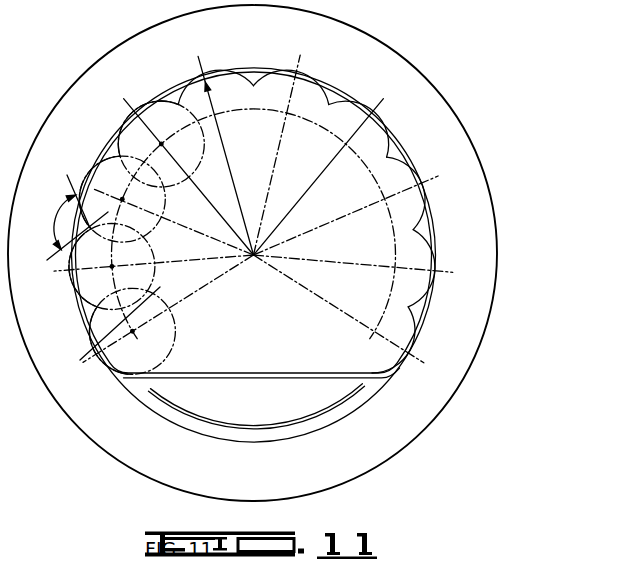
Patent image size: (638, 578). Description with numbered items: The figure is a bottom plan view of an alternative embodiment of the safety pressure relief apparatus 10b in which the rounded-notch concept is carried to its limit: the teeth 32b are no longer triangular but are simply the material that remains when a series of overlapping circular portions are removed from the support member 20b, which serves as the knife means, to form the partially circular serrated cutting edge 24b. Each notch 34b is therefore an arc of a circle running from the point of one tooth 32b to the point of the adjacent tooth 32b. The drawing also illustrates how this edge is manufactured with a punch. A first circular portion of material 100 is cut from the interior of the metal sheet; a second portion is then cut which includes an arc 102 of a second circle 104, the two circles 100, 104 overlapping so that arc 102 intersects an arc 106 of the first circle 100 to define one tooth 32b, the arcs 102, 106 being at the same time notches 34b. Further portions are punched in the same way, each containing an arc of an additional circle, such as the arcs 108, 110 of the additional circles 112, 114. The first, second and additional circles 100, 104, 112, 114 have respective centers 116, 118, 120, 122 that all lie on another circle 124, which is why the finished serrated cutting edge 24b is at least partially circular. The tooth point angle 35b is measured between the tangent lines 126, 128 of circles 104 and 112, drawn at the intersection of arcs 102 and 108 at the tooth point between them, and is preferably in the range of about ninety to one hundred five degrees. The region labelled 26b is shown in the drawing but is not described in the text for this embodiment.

The safety pressure relief apparatus 10b is at (450, 55).
The support member 20b is at (475, 124).
The serrated cutting edge 24b is at (226, 133).
The cup / chamber 26b is at (285, 362).
The teeth 32b is at (240, 86).
The notches 34b is at (282, 77).
The tooth point angle 35b is at (58, 221).
The first circular portion of material 100 is at (182, 315).
The arc of second circle 102 is at (74, 278).
The second circle 104 is at (150, 244).
The arc of first circle 106 is at (149, 332).
The arc of additional circle 108 is at (122, 199).
The arc of additional circle 110 is at (137, 130).
The additional circle 112 is at (180, 205).
The additional circle 114 is at (190, 181).
The center of first circle 116 is at (158, 291).
The center of second circle 118 is at (120, 262).
The center of additional circle 120 is at (140, 197).
The center of additional circle 122 is at (179, 147).
The circle of centers 124 is at (187, 338).
The tangent line 126 is at (50, 258).
The tangent line 128 is at (66, 178).